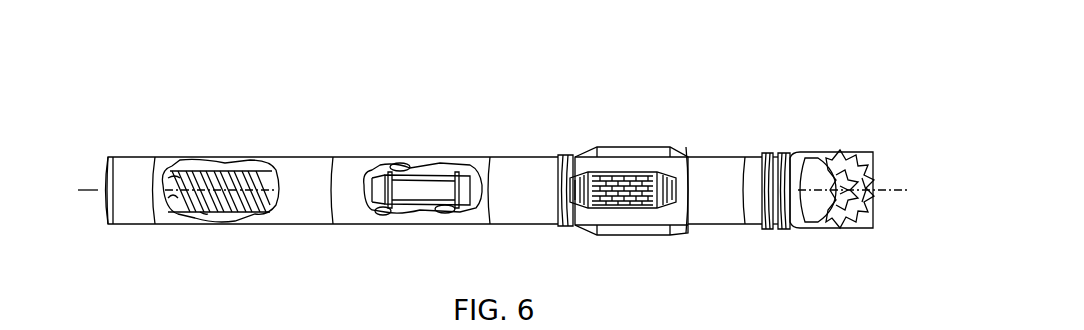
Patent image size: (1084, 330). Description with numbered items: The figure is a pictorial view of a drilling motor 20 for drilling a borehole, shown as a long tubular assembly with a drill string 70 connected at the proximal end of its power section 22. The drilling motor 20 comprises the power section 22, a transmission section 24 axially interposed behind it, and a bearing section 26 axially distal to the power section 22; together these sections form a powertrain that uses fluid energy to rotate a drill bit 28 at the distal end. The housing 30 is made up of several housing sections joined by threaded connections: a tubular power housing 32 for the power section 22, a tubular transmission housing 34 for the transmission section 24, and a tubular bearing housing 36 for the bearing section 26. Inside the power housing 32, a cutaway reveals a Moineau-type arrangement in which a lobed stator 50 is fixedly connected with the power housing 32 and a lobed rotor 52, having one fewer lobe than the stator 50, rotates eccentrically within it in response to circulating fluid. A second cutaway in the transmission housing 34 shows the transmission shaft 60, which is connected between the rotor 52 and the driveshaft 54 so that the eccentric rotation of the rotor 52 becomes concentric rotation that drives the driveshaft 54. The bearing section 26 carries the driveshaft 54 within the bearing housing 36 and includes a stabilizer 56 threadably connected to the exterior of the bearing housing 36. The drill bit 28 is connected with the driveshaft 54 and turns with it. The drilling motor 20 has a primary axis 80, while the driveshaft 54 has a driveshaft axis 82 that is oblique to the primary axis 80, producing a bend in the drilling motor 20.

The drilling motor 20 is at (533, 138).
The power section 22 is at (220, 179).
The transmission section 24 is at (423, 156).
The bearing section 26 is at (632, 163).
The drill bit 28 is at (865, 150).
The housing 30 is at (290, 150).
The power housing 32 is at (300, 213).
The transmission housing 34 is at (368, 215).
The bearing housing 36 is at (535, 210).
The stator 50 is at (196, 222).
The rotor 52 is at (222, 180).
The driveshaft 54 is at (784, 154).
The stabilizer 56 is at (636, 150).
The transmission shaft 60 is at (440, 183).
The drill string 70 is at (113, 157).
The primary axis 80 is at (90, 192).
The driveshaft axis 82 is at (890, 193).